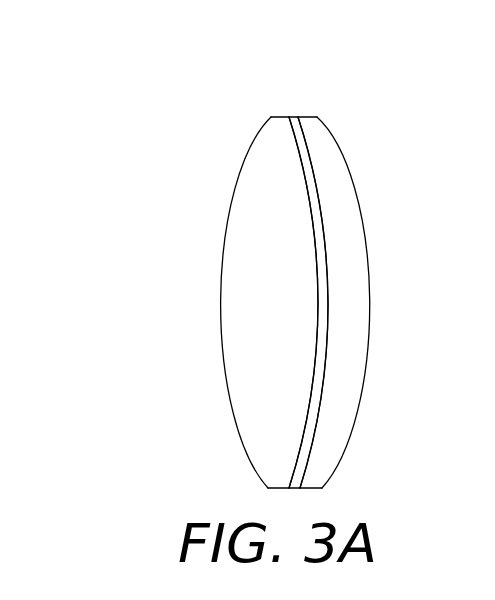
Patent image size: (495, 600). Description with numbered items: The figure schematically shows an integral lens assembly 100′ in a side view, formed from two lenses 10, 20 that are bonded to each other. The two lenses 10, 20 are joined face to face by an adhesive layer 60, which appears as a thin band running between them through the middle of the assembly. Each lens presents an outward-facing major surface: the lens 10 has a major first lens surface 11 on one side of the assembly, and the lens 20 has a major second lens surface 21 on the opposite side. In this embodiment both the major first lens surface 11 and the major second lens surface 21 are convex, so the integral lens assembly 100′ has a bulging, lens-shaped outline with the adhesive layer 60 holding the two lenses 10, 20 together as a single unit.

The integral lens assembly 100′ is at (202, 87).
The lens 10 is at (347, 263).
The major first lens surface 11 is at (358, 404).
The lens 20 is at (242, 213).
The major second lens surface 21 is at (232, 398).
The adhesive layer 60 is at (320, 308).